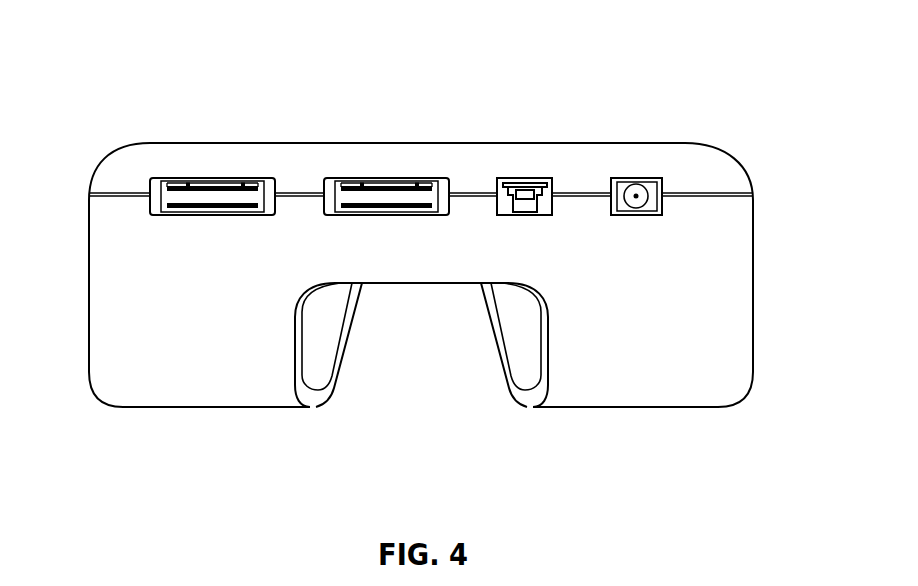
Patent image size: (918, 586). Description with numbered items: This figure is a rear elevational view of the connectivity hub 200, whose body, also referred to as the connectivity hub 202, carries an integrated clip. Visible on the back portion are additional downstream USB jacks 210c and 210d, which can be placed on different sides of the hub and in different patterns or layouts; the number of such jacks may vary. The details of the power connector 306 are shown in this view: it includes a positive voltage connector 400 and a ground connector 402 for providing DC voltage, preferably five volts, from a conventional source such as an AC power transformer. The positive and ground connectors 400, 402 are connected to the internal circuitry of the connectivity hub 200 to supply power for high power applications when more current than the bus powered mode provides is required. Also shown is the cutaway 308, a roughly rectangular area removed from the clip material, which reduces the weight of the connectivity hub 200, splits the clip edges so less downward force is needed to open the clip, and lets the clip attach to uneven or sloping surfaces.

The connectivity hub 200 is at (133, 47).
The connectivity hub 202 is at (413, 144).
The USB jack 210c is at (207, 178).
The USB jack 210d is at (353, 178).
The positive voltage connector 400 is at (546, 178).
The ground connector 402 is at (663, 188).
The power connector 306 is at (663, 208).
The cutaway 308 is at (371, 418).